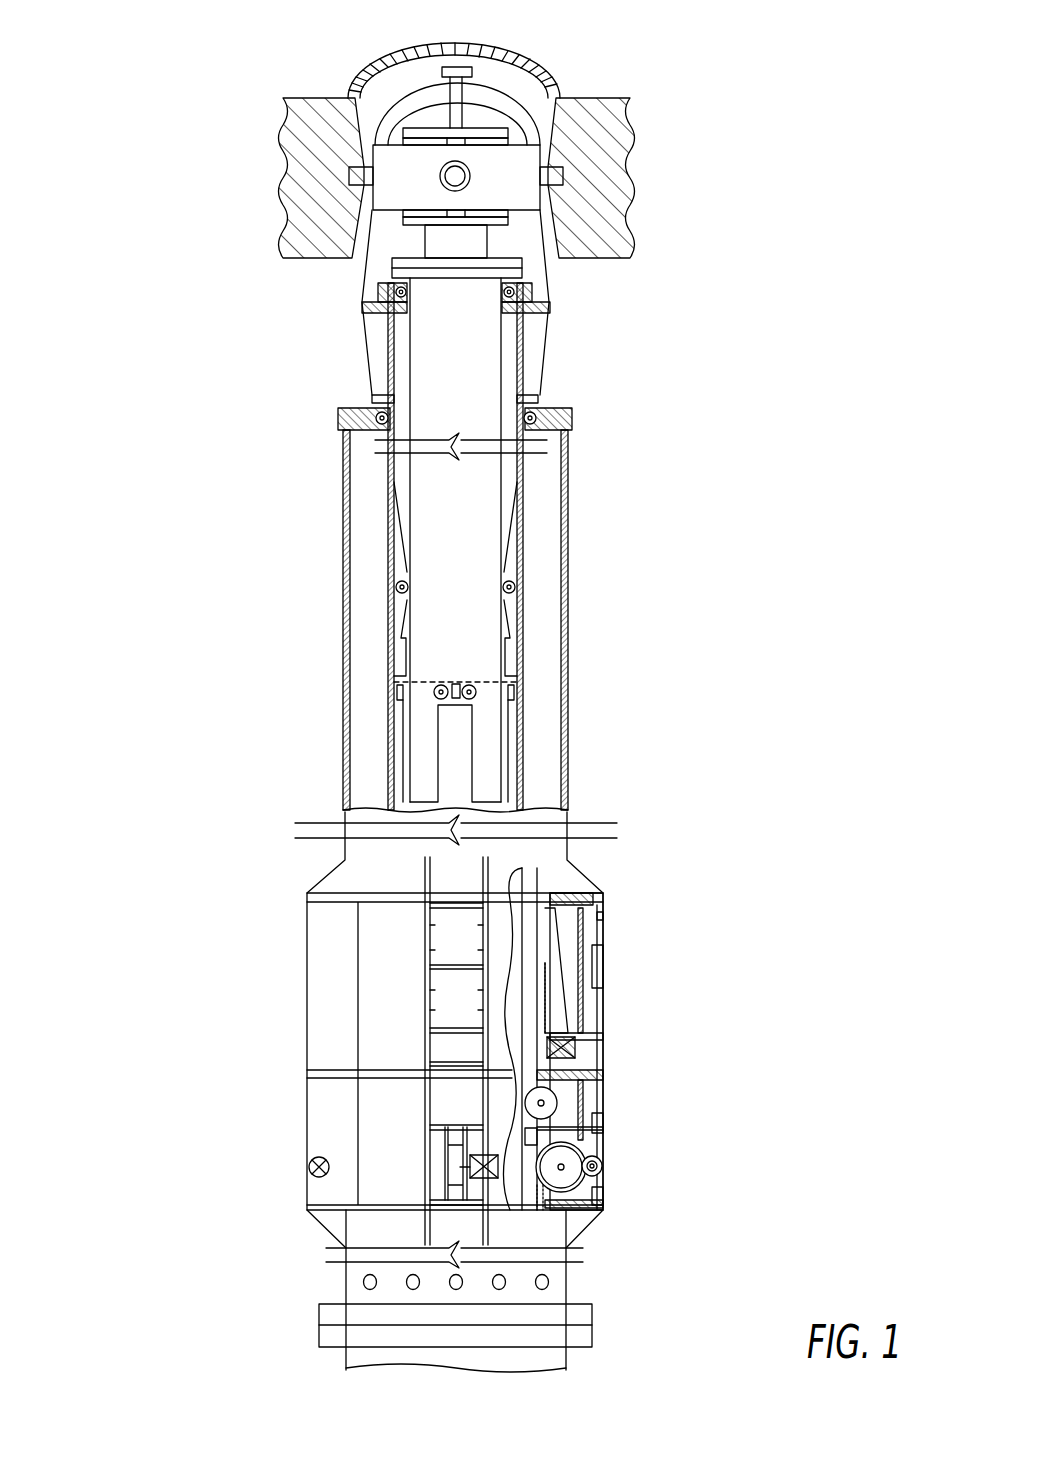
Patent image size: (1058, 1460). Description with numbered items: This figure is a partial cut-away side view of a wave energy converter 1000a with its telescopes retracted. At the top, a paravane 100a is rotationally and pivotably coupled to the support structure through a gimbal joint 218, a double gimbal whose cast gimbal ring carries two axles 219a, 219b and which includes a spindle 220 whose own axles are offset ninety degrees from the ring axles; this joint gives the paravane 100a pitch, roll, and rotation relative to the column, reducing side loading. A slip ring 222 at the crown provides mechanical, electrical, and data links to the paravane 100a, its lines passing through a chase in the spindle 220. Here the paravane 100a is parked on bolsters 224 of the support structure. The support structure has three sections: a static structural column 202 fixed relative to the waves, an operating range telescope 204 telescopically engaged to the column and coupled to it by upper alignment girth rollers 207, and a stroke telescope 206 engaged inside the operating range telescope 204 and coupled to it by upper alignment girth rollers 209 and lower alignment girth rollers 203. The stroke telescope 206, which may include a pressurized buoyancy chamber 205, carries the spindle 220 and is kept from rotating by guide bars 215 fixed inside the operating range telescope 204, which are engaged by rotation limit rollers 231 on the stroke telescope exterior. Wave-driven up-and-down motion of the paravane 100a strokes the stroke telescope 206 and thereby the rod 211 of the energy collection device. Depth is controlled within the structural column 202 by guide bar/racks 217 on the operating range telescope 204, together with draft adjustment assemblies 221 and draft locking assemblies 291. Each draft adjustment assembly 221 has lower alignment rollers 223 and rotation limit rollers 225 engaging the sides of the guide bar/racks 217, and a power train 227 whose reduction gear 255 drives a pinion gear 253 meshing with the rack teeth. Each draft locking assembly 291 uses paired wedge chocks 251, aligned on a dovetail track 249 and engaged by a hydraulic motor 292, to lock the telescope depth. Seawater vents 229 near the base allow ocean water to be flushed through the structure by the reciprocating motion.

The wave energy converter 1000a is at (167, 101).
The paravane 100a is at (598, 97).
The slip ring 222 is at (445, 65).
The gimbal joint 218 is at (372, 153).
The gimbal ring axle 219b is at (470, 171).
The gimbal ring axle 219a is at (372, 207).
The spindle 220 is at (460, 220).
The bolsters 224 is at (375, 290).
The upper alignment girth rollers 209 is at (393, 305).
The operating range telescope 204 is at (525, 349).
The stroke telescope 206 is at (408, 367).
The pressurized buoyancy chamber 205 is at (450, 409).
The upper alignment girth rollers 207 is at (537, 407).
The lower alignment girth rollers 203 is at (401, 582).
The rotation limit rollers 231 is at (434, 690).
The guide bars 215 is at (397, 718).
The rod 211 is at (438, 748).
The guide bar/racks 217 is at (532, 887).
The draft adjustment assemblies 221 is at (614, 1118).
The paired wedge chocks 251 is at (562, 931).
The dovetail track 249 is at (553, 946).
The hydraulic motor 292 is at (600, 963).
The draft locking assemblies 291 is at (593, 1003).
The lower alignment rollers 223 is at (557, 1105).
The rotation limit rollers 225 is at (583, 1140).
The power train 227 is at (611, 1192).
The reduction gear 255 is at (604, 1167).
The pinion gear 253 is at (565, 1183).
The seawater vents 229 is at (363, 1282).
The structural column 202 is at (566, 1280).